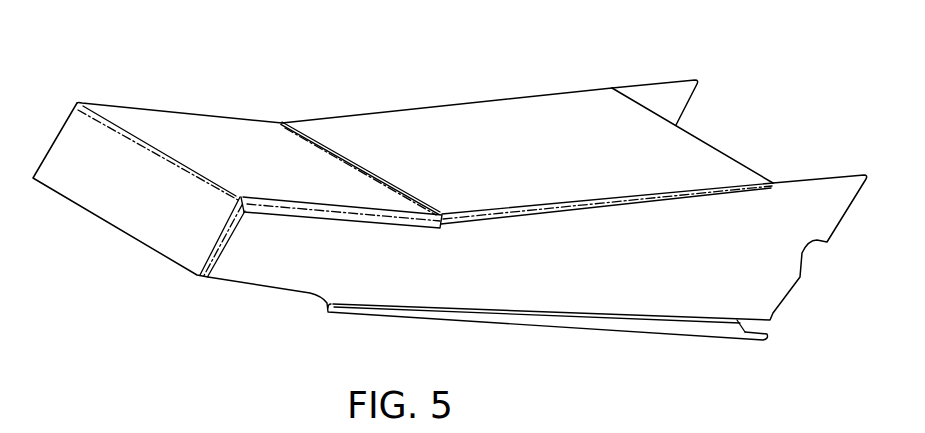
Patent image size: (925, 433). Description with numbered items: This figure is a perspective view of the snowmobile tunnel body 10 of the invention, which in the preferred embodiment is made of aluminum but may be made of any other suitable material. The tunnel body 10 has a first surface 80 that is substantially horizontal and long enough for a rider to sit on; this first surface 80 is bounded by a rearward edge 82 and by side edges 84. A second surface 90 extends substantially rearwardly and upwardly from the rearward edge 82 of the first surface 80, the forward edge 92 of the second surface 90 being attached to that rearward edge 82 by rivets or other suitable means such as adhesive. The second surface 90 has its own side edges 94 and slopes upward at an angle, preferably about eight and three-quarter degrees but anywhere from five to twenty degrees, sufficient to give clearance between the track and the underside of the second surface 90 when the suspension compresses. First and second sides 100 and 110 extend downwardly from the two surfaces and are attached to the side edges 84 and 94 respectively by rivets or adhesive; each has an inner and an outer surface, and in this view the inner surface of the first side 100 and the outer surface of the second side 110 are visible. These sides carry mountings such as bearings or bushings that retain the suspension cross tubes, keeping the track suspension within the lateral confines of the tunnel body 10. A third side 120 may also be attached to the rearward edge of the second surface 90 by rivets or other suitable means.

The snowmobile tunnel body 10 is at (295, 72).
The first surface 80 is at (517, 153).
The rearward edge 82 is at (349, 161).
The side edges 84 is at (467, 103).
The second surface 90 is at (254, 167).
The forward edge 92 is at (339, 161).
The side edges 94 is at (193, 113).
The first side 100 is at (670, 98).
The second side 110 is at (661, 264).
The third side 120 is at (155, 210).